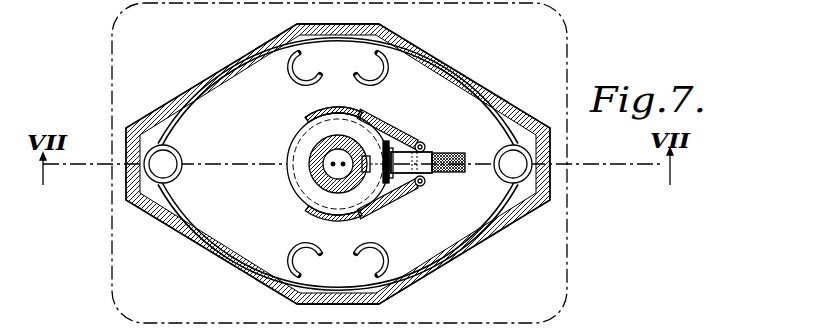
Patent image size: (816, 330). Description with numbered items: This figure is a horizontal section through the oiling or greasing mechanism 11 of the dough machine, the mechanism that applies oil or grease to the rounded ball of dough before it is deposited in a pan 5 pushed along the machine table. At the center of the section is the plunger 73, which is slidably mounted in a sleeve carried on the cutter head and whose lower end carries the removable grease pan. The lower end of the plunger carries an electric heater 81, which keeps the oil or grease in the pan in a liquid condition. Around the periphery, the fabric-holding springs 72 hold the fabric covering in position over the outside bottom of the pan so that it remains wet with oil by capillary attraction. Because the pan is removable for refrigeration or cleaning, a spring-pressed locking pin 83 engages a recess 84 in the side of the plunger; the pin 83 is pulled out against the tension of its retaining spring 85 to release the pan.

The pan 5 is at (567, 226).
The oiling or greasing mechanism 11 is at (215, 258).
The fabric-holding springs 72 is at (197, 218).
The plunger 73 is at (315, 140).
The electric heater 81 is at (335, 170).
The spring-pressed locking pin 83 is at (440, 174).
The recess 84 is at (384, 142).
The retaining spring 85 is at (380, 203).